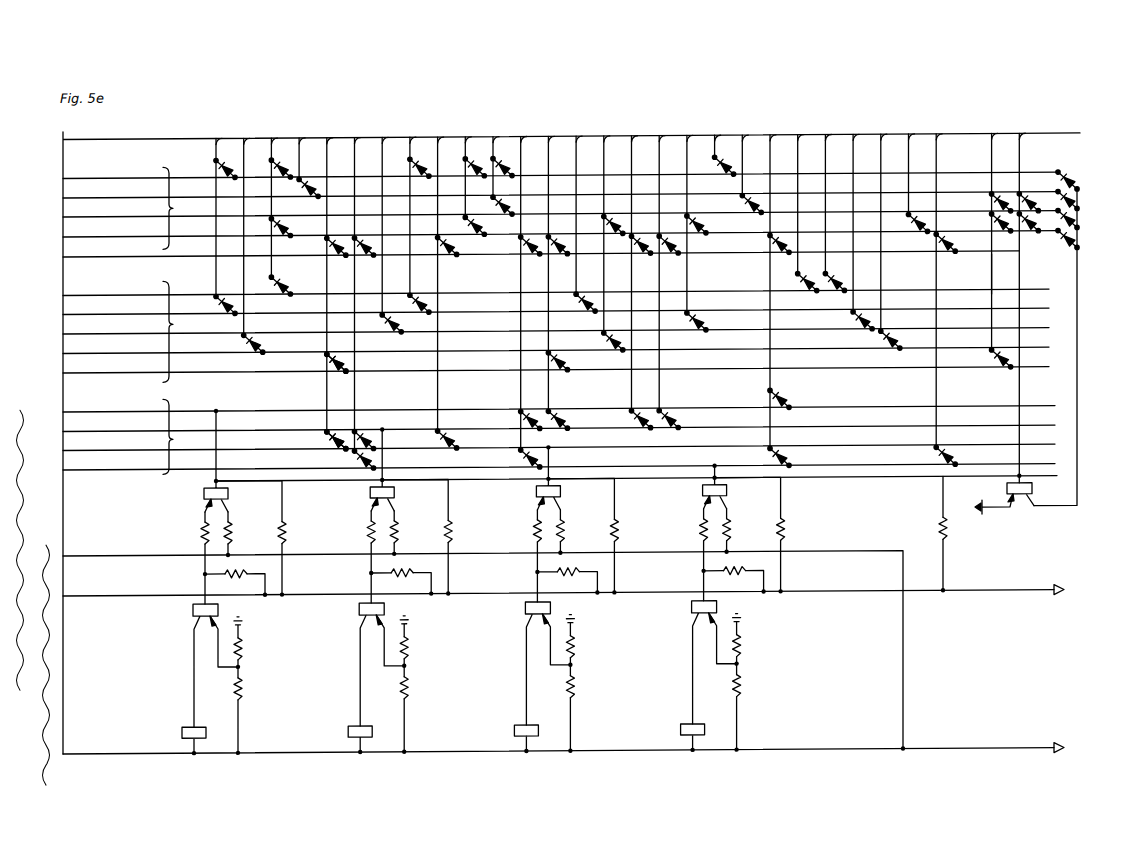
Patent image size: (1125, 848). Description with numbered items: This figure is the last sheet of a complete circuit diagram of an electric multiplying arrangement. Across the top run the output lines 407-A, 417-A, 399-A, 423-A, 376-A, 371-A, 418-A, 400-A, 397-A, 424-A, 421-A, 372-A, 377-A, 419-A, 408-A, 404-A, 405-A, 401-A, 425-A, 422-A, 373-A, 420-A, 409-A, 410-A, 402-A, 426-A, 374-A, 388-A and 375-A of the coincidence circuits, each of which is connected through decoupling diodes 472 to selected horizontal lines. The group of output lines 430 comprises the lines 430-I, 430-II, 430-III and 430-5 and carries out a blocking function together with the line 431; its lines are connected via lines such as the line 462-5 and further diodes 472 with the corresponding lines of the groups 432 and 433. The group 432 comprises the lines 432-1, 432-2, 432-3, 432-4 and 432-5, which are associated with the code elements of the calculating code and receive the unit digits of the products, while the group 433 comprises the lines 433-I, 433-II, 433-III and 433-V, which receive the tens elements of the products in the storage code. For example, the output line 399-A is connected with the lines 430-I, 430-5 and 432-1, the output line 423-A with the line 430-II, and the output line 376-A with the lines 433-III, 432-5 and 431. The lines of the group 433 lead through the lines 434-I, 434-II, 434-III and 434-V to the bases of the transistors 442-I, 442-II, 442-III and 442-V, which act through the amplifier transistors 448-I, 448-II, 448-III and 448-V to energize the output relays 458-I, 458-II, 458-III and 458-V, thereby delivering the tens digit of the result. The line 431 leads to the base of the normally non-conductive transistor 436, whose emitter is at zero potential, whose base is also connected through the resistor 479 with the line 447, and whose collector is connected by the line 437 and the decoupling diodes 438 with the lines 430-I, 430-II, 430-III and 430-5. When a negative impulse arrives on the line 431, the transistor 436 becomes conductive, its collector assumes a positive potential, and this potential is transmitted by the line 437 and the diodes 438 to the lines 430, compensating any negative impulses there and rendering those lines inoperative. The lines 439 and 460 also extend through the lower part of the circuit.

The output line 430-I is at (80, 178).
The output line 430-II is at (80, 197).
The output line 430-III is at (80, 216).
The output line 430-5 is at (80, 236).
The group of output lines 430 is at (183, 208).
The line 431 is at (80, 256).
The output line 432-1 is at (80, 294).
The output line 432-2 is at (80, 314).
The output line 432-3 is at (80, 333).
The output line 432-4 is at (80, 352).
The output line 432-5 is at (80, 372).
The group of output lines 432 is at (183, 331).
The output line 433-I is at (80, 411).
The output line 433-II is at (80, 430).
The output line 433-III is at (80, 450).
The output line 433-V is at (80, 469).
The group of output lines 433 is at (183, 436).
The output line of coincidence circuit 407-A is at (231, 218).
The output line of coincidence circuit 417-A is at (257, 136).
The output line of coincidence circuit 399-A is at (286, 208).
The output line of coincidence circuit 423-A is at (312, 136).
The output line of coincidence circuit 376-A is at (342, 285).
The output line of coincidence circuit 371-A is at (368, 136).
The output line of coincidence circuit 418-A is at (397, 227).
The output line of coincidence circuit 400-A is at (423, 136).
The output line of coincidence circuit 397-A is at (453, 284).
The output line of coincidence circuit 424-A is at (478, 136).
The output line of coincidence circuit 421-A is at (508, 167).
The output line of coincidence circuit 372-A is at (534, 136).
The output line of coincidence circuit 377-A is at (563, 275).
The output line of coincidence circuit 419-A is at (589, 136).
The output line of coincidence circuit 408-A is at (619, 235).
The output line of coincidence circuit 404-A is at (644, 136).
The output line of coincidence circuit 405-A is at (674, 274).
The output line of coincidence circuit 401-A is at (700, 136).
The output line of coincidence circuit 425-A is at (730, 147).
The output line of coincidence circuit 422-A is at (755, 136).
The output line of coincidence circuit 373-A is at (785, 292).
The output line of coincidence circuit 420-A is at (811, 136).
The output line of coincidence circuit 409-A is at (840, 205).
The output line of coincidence circuit 410-A is at (866, 136).
The output line of coincidence circuit 402-A is at (896, 233).
The output line of coincidence circuit 426-A is at (922, 136).
The output line of coincidence circuit 374-A is at (951, 291).
The output line of coincidence circuit 388-A is at (1007, 242).
The output line of coincidence circuit 375-A is at (1032, 136).
The line 462-5 is at (991, 283).
The decoupling diodes 472 is at (326, 358).
The decoupling diodes 438 is at (1062, 183).
The line 437 is at (1044, 512).
The transistor 436 is at (1007, 494).
The resistor 479 is at (946, 538).
The line 434-I is at (213, 478).
The line 434-II is at (379, 478).
The line 434-III is at (545, 478).
The line 434-V is at (712, 478).
The transistor 442-I is at (203, 497).
The transistor 442-II is at (369, 497).
The transistor 442-III is at (535, 497).
The transistor 442-V is at (702, 497).
The amplifier transistor 448-I is at (192, 611).
The amplifier transistor 448-II is at (358, 611).
The amplifier transistor 448-III is at (524, 611).
The amplifier transistor 448-V is at (691, 611).
The output relay 458-I is at (181, 734).
The output relay 458-II is at (347, 734).
The output relay 458-III is at (513, 734).
The output relay 458-V is at (680, 734).
The supply line 439 is at (100, 556).
The line 447 is at (100, 596).
The supply line 460 (-30V) 460 is at (816, 753).